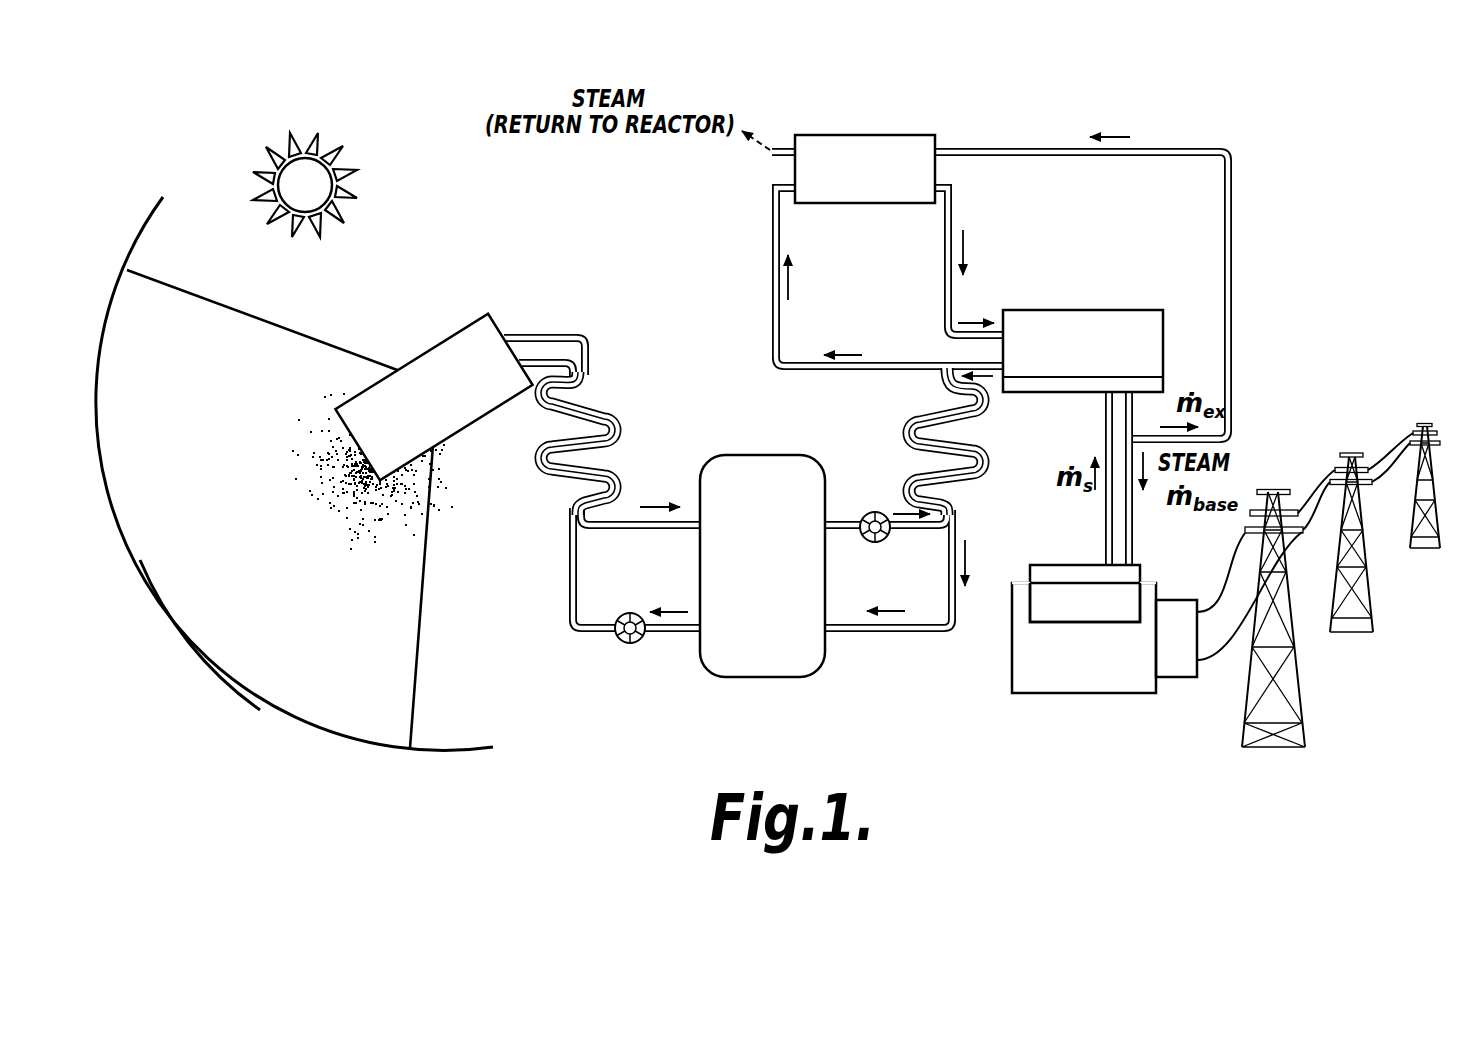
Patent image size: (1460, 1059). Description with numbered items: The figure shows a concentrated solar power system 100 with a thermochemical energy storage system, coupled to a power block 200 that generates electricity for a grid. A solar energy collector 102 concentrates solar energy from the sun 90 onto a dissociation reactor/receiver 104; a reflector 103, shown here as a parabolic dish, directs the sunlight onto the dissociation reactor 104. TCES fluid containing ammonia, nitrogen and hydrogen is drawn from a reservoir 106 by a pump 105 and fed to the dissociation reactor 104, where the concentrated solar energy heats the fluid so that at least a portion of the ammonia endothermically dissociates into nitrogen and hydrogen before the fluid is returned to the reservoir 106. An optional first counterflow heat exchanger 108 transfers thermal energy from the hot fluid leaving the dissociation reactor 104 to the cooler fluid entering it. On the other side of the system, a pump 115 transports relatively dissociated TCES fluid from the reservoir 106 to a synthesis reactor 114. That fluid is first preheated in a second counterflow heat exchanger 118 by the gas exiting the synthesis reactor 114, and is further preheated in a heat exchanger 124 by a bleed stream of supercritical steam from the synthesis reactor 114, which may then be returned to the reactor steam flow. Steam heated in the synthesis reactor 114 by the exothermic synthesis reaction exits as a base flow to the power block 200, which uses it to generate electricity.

The sun 90 is at (317, 168).
The concentrated solar power (CSP) system 100 is at (1274, 126).
The solar energy collector 102 is at (268, 718).
The reflector 103 is at (177, 630).
The dissociation reactor/receiver 104 is at (489, 415).
The pump 105 is at (618, 636).
The reservoir 106 is at (825, 645).
The first counterflow heat exchanger 108 is at (600, 404).
The synthesis reactor 114 is at (1165, 350).
The pump 115 is at (868, 512).
The second counterflow heat exchanger 118 is at (895, 413).
The heat exchanger 124 is at (830, 135).
The power block 200 is at (1180, 677).